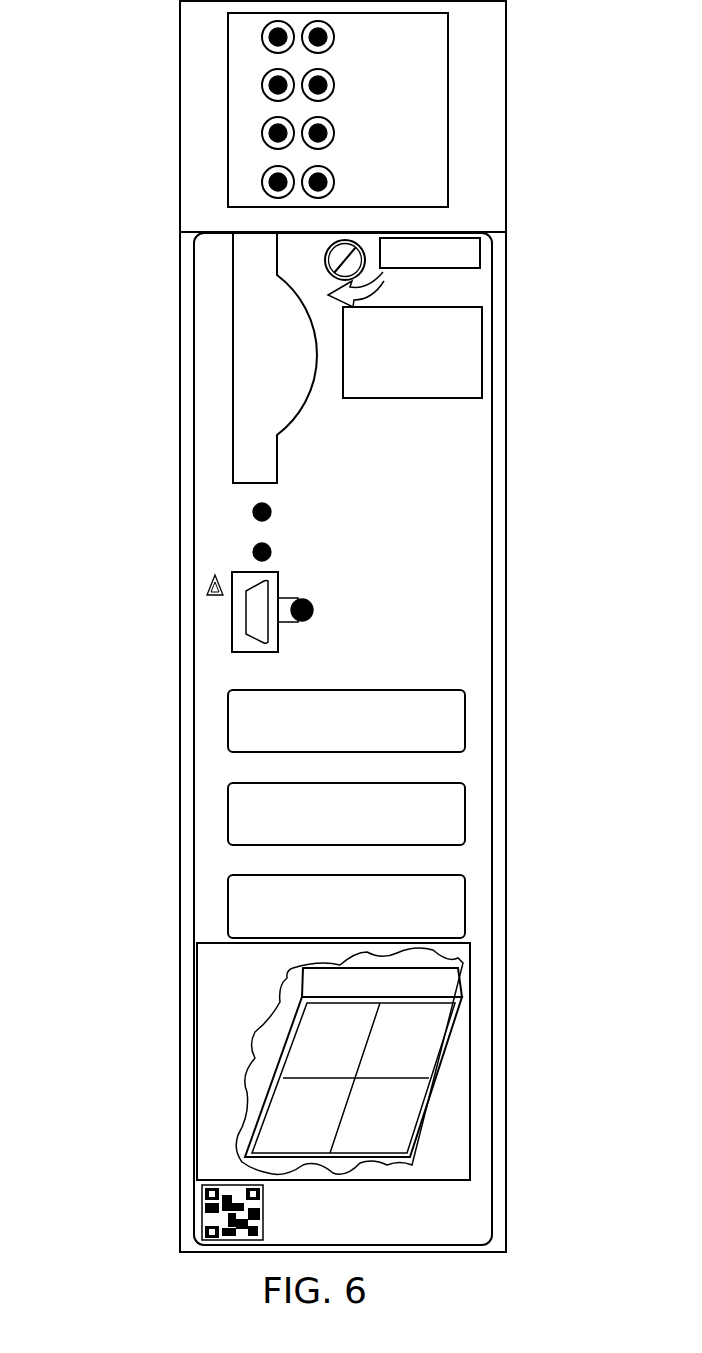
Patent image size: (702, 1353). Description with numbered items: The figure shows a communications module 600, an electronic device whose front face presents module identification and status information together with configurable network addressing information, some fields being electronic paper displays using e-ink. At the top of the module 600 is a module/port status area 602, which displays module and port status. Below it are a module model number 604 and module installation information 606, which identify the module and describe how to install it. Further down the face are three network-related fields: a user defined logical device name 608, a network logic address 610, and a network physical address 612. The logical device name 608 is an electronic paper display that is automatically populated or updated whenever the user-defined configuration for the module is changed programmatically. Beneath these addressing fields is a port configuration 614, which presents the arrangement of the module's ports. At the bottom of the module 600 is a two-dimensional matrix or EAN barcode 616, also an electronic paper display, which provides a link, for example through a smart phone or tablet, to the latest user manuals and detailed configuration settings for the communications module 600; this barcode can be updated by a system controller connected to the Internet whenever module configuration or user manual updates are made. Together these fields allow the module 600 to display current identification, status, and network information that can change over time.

The communications module 600 is at (108, 166).
The module/port status area 602 is at (448, 95).
The module model number 604 is at (455, 268).
The module installation information 606 is at (455, 398).
The user defined logical device name 608 is at (465, 720).
The network logic address 610 is at (465, 812).
The network physical address 612 is at (465, 905).
The port configuration 614 is at (470, 1048).
The 2D matrix/barcode 616 is at (202, 1212).